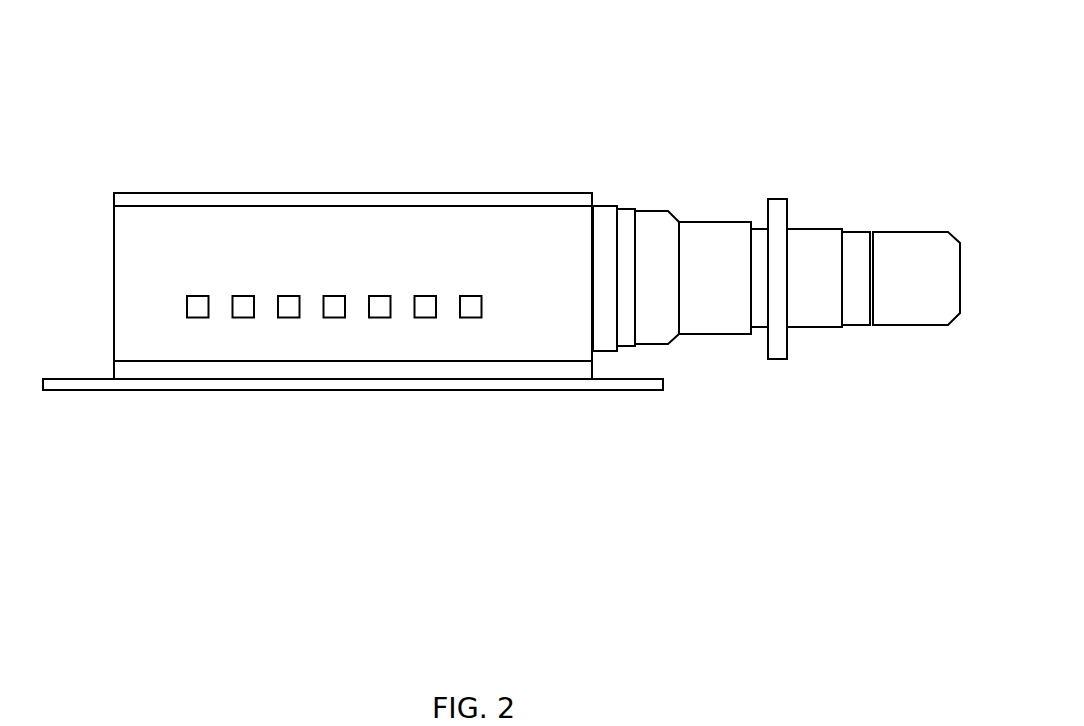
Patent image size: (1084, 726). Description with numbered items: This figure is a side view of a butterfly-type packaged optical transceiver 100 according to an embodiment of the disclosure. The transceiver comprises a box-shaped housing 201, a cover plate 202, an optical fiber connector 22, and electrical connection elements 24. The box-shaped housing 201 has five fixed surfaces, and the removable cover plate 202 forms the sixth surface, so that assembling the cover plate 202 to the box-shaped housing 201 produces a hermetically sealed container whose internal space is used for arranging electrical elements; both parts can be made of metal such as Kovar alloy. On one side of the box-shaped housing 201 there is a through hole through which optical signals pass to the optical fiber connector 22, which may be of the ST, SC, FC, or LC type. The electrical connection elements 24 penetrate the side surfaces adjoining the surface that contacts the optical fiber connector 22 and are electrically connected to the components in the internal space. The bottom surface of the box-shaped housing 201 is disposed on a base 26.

The sensor assembly 100 is at (540, 33).
The box-shaped housing 201 is at (372, 265).
The cover plate 202 is at (347, 193).
The electrical connection elements 24 is at (377, 307).
The base 26 is at (195, 390).
The optical fiber connector 22 is at (853, 222).